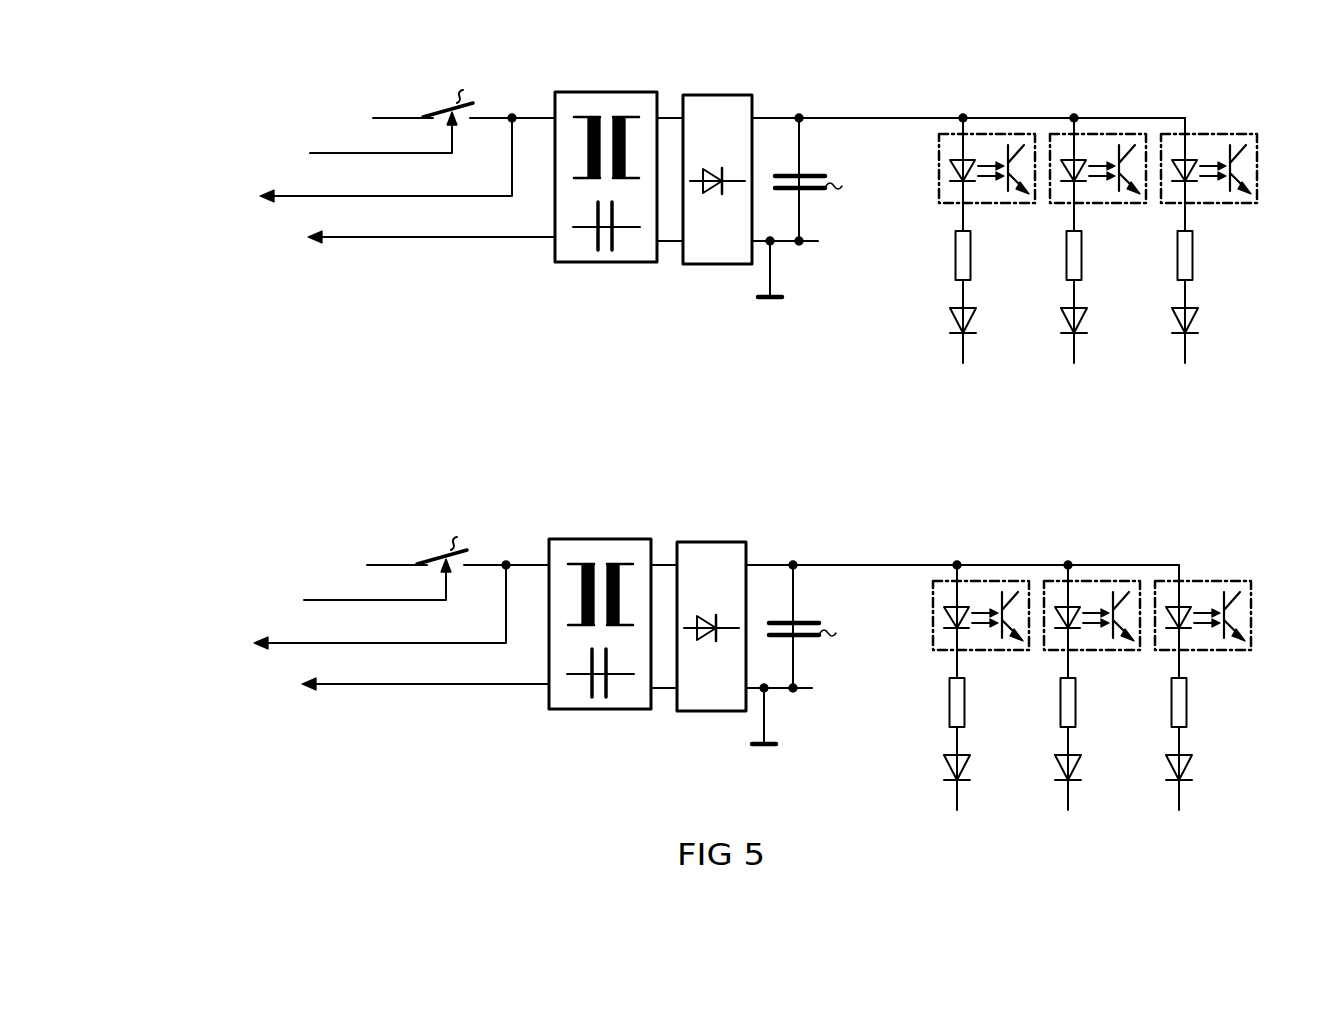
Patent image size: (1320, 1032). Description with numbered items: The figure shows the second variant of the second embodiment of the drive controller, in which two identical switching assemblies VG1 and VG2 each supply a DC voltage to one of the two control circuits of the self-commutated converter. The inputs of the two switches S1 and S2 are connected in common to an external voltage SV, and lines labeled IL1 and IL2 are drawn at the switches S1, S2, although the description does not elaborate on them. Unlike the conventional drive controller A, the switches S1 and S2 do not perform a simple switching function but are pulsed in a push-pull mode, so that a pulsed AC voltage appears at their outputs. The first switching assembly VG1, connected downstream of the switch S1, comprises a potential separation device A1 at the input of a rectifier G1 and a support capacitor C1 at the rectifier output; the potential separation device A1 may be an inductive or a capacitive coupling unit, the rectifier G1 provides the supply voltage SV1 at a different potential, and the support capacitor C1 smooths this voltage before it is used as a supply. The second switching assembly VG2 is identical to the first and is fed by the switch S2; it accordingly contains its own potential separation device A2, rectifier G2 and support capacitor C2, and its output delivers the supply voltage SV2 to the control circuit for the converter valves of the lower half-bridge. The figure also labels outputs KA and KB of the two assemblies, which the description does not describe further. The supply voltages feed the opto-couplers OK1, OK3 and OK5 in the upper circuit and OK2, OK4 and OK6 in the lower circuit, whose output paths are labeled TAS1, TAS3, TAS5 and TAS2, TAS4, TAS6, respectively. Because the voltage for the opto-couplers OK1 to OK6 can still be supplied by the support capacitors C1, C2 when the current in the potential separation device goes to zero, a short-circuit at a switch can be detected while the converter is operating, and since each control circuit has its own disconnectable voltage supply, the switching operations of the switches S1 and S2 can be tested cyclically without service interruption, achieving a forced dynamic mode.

The external voltage SV is at (381, 337).
The switch S1 is at (489, 88).
The switch S2 is at (483, 536).
The switch-on signal 1 IL1 is at (364, 140).
The switch-on signal 2 IL2 is at (358, 589).
The channel A output KA is at (412, 236).
The channel B output KB is at (407, 681).
The circuit assembly VG1 is at (672, 134).
The second switching assembly VG2 is at (667, 581).
The potential separation device A1 is at (606, 159).
The isolating transformer 2 A2 is at (600, 608).
The rectifier G1 is at (717, 160).
The rectifier 2 G2 is at (711, 609).
The supply voltage SV1 is at (968, 101).
The supply voltage 2 SV2 is at (962, 549).
The support capacitor C1 is at (810, 207).
The smoothing capacitor 2 C2 is at (804, 654).
The opto-coupler OK1 is at (987, 142).
The opto-coupler OK2 is at (981, 590).
The opto-coupler OK3 is at (1098, 142).
The opto-coupler OK4 is at (1092, 590).
The opto-coupler OK5 is at (1209, 142).
The opto-coupler OK6 is at (1203, 590).
The key output 1 TAS1 is at (962, 301).
The key output 2 TAS2 is at (956, 748).
The key output 3 TAS3 is at (1073, 301).
The key output 4 TAS4 is at (1067, 748).
The key output 5 TAS5 is at (1184, 301).
The key output 6 TAS6 is at (1178, 748).
The conventional drive controller A is at (844, 432).